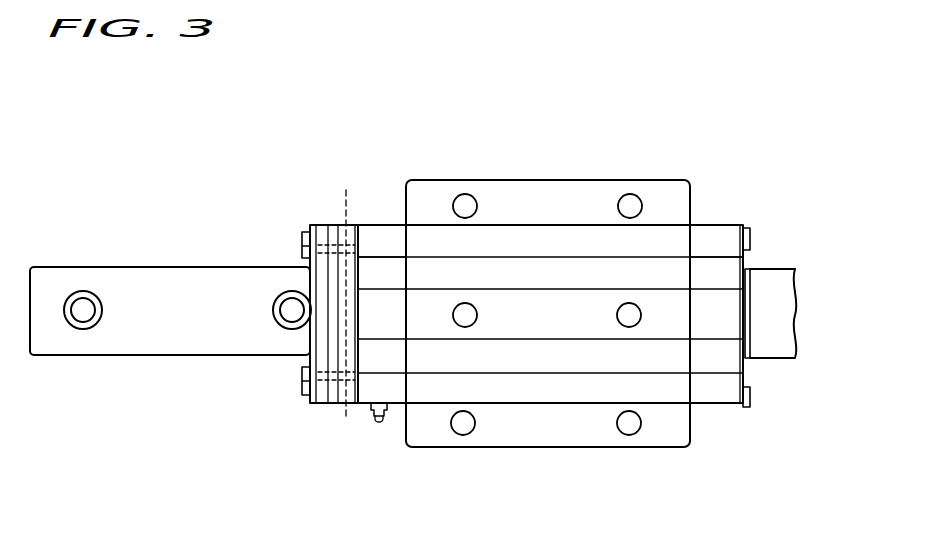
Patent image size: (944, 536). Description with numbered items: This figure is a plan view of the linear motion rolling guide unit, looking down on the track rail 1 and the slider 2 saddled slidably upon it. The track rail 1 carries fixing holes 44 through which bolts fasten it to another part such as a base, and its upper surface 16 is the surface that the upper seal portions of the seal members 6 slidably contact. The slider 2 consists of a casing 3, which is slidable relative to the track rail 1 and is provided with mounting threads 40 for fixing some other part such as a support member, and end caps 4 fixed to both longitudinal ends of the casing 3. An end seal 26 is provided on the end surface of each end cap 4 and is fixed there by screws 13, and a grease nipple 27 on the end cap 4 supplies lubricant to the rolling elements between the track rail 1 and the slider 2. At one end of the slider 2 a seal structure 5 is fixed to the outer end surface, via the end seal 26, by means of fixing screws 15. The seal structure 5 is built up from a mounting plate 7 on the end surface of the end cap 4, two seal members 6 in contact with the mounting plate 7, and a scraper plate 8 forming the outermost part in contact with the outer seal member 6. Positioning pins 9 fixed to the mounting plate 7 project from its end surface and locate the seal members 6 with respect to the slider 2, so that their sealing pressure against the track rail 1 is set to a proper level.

The track rail 1 is at (140, 266).
The slider 2 is at (555, 303).
The casing 3 is at (503, 210).
The end cap 4 is at (390, 257).
The seal structure 5 is at (327, 404).
The seal member 6 is at (333, 224).
The mounting plate 7 is at (342, 404).
The scraper plate 8 is at (308, 232).
The positioning pin 9 is at (353, 309).
The screw 13 is at (750, 237).
The fixing screw 15 is at (302, 250).
The upper surface of track rail 16 is at (187, 290).
The end seal 26 is at (358, 261).
The grease nipple 27 is at (380, 423).
The mounting thread 40 is at (631, 200).
The fixing hole 44 is at (83, 315).